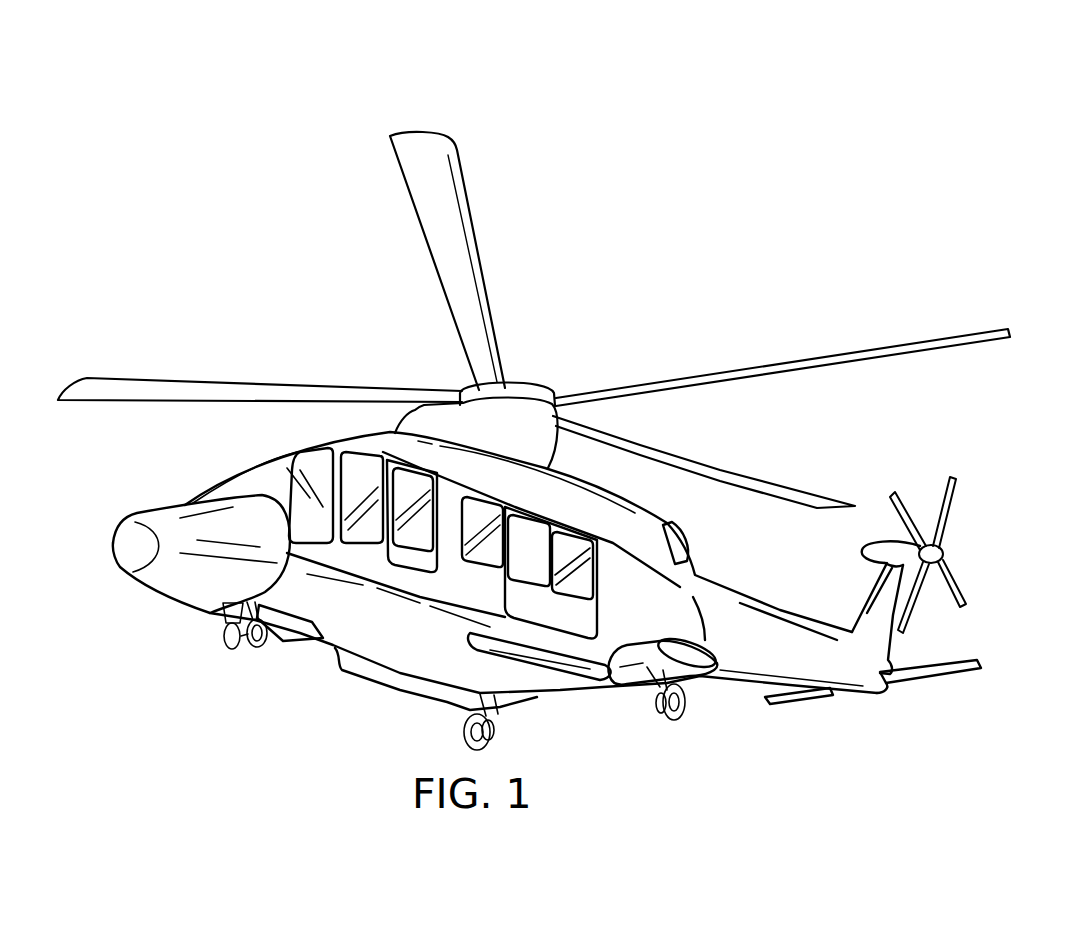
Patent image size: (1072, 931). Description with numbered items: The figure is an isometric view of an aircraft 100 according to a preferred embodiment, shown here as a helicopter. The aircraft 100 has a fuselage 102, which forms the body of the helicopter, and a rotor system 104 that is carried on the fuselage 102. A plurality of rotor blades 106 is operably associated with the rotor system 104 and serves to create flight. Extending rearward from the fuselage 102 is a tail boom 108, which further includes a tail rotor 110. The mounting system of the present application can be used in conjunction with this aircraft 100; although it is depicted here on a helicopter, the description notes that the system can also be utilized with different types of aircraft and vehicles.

The aircraft 100 is at (201, 117).
The fuselage 102 is at (332, 645).
The rotor system 104 is at (550, 346).
The rotor blades 106 is at (767, 376).
The tail boom 108 is at (740, 672).
The tail rotor 110 is at (947, 525).